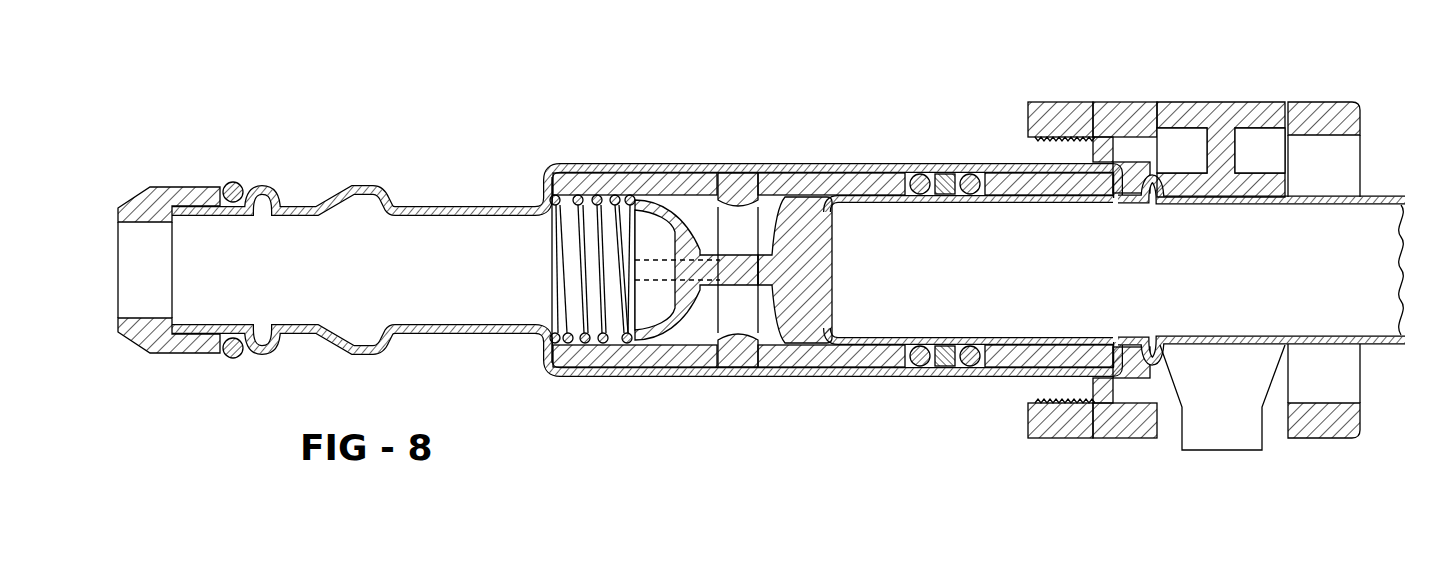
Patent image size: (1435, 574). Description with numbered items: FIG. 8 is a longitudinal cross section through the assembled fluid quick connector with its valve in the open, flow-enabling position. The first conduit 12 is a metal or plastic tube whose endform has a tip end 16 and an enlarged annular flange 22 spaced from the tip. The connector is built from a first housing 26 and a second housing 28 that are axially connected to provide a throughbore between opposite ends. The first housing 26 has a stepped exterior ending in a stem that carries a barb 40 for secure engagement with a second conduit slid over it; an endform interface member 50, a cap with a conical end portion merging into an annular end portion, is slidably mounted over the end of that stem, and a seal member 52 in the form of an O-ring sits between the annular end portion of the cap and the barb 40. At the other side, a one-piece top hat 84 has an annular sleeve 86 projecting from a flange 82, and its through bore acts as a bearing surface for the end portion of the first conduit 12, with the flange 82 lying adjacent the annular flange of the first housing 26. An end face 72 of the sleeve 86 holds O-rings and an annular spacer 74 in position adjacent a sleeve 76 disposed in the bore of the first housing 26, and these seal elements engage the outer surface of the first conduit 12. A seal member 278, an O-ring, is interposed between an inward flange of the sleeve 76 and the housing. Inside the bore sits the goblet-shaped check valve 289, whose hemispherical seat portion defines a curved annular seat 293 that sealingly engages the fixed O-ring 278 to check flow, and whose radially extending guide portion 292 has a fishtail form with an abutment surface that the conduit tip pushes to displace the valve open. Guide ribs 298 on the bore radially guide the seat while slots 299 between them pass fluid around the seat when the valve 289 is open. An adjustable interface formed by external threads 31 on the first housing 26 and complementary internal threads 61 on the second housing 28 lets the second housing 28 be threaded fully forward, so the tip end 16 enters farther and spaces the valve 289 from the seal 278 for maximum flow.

The first conduit 12 is at (1376, 198).
The tip end 16 is at (1250, 100).
The enlarged annular flange 22 is at (1150, 390).
The first housing 26 is at (628, 160).
The second housing 28 is at (1137, 103).
The external threads 31 is at (1097, 122).
The barb 40 is at (285, 198).
The endform interface member 50 is at (168, 190).
The seal member 52 is at (240, 182).
The internal threads 61 is at (1027, 146).
The end face 72 is at (970, 367).
The annular spacer 74 is at (920, 362).
The sleeve 76 is at (943, 173).
The flange 82 is at (1127, 390).
The top hat 84 is at (1054, 380).
The annular sleeve 86 is at (1010, 378).
The seal member 278 is at (736, 293).
The check valve 289 is at (658, 345).
The guide portion 292 is at (787, 213).
The curved annular seat 293 is at (660, 163).
The guide ribs 298 is at (592, 164).
The slots 299 is at (648, 285).